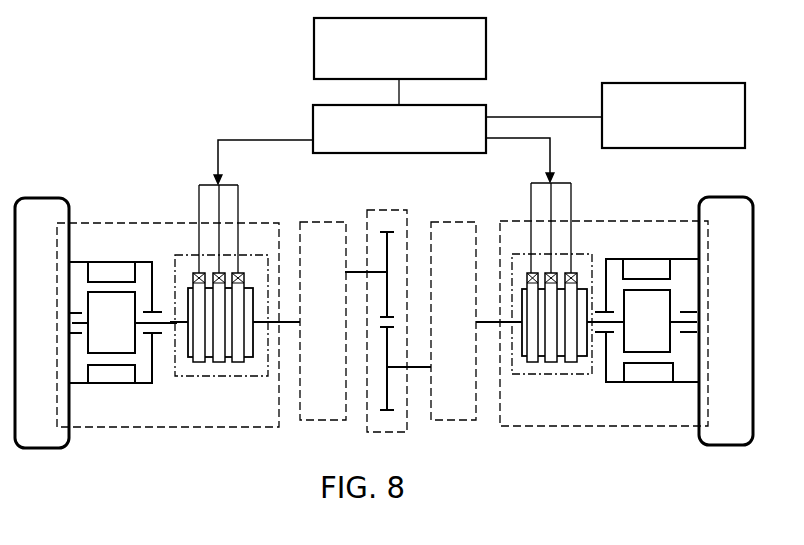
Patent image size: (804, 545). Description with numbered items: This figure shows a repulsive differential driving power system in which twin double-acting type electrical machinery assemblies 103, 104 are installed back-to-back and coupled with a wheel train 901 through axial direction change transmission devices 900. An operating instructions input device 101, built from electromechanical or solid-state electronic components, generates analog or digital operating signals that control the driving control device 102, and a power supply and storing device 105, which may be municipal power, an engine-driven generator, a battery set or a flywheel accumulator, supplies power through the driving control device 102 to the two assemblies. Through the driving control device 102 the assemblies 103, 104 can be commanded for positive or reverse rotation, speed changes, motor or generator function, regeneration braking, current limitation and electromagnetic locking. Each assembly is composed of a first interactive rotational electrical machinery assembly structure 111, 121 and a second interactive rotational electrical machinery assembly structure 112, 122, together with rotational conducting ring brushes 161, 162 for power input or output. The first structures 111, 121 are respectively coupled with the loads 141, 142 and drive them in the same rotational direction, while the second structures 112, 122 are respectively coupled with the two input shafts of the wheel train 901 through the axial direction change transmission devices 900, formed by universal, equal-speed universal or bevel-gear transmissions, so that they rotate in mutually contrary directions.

The operating instructions input device 101 is at (313, 62).
The driving control device 102 is at (315, 125).
The power supply and storing device 105 is at (705, 82).
The double-acting type electrical machinery assembly 103 is at (82, 222).
The double-acting type electrical machinery assembly 104 is at (585, 220).
The first interactive rotational electrical machinery assembly structure 111 is at (107, 373).
The second interactive rotational electrical machinery assembly structure 112 is at (97, 313).
The first interactive rotational electrical machinery assembly structure 121 is at (640, 370).
The second interactive rotational electrical machinery assembly structure 122 is at (655, 307).
The load 141 is at (40, 217).
The load 142 is at (723, 213).
The rotational conducting ring brush 161 is at (192, 377).
The rotational conducting ring brush 162 is at (528, 377).
The axial direction change transmission device 900 is at (321, 222).
The wheel train 901 is at (395, 208).